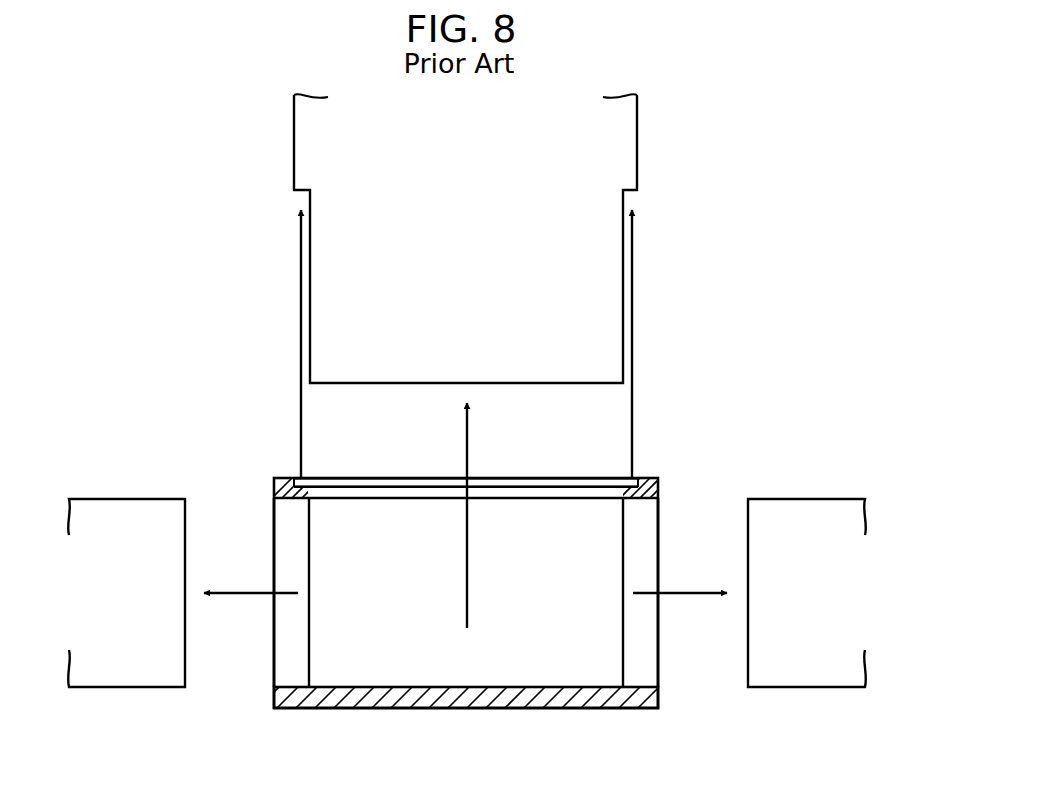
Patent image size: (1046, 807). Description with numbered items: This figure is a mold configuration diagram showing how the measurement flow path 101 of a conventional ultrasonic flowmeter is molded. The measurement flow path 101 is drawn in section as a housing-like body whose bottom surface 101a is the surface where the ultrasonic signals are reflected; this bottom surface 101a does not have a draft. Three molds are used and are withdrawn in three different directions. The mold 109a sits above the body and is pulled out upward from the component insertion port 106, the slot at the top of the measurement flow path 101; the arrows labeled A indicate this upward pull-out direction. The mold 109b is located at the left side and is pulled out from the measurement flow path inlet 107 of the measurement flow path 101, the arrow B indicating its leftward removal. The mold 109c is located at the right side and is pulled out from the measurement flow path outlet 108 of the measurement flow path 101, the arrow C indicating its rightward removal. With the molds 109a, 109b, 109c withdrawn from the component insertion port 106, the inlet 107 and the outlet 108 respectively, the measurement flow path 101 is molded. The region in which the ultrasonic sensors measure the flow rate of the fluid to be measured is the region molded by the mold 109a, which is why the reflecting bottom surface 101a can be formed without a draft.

The measurement flow path 101 is at (566, 640).
The bottom surface 101a is at (375, 688).
The component insertion port 106 is at (555, 485).
The measurement flow path inlet 107 is at (272, 667).
The measurement flow path outlet 108 is at (660, 667).
The mold 109a is at (630, 143).
The mold 109b is at (125, 507).
The mold 109c is at (796, 507).
The upward flow direction arrow A is at (301, 383).
The leftward flow direction arrow B is at (235, 592).
The rightward flow direction arrow C is at (697, 592).